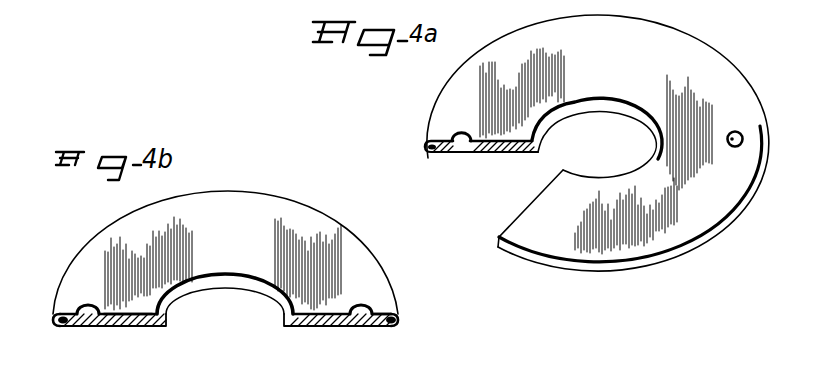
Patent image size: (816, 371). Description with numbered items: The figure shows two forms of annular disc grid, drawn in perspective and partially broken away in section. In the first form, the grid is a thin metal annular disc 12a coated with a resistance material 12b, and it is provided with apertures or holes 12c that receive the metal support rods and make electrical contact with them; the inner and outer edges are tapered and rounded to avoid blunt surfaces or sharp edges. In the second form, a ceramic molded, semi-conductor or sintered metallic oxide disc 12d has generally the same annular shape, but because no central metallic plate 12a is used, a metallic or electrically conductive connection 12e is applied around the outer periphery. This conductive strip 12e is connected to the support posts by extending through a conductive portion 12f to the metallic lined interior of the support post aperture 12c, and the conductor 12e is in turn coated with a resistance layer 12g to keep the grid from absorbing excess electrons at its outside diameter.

In FIG. 4a, the metal annular disc 12a is at (433, 157).
In FIG. 4a, the resistance material 12b is at (433, 108).
In FIG. 4a, the apertures or holes 12c is at (733, 147).
In FIG. 4b, the apertures or holes 12c is at (361, 306).
In FIG. 4b, the ceramic molded disc grid 12d is at (138, 316).
In FIG. 4b, the conductive strip 12e is at (50, 323).
In FIG. 4b, the conductive portion 12f is at (383, 314).
In FIG. 4b, the resistance layer 12g is at (52, 319).